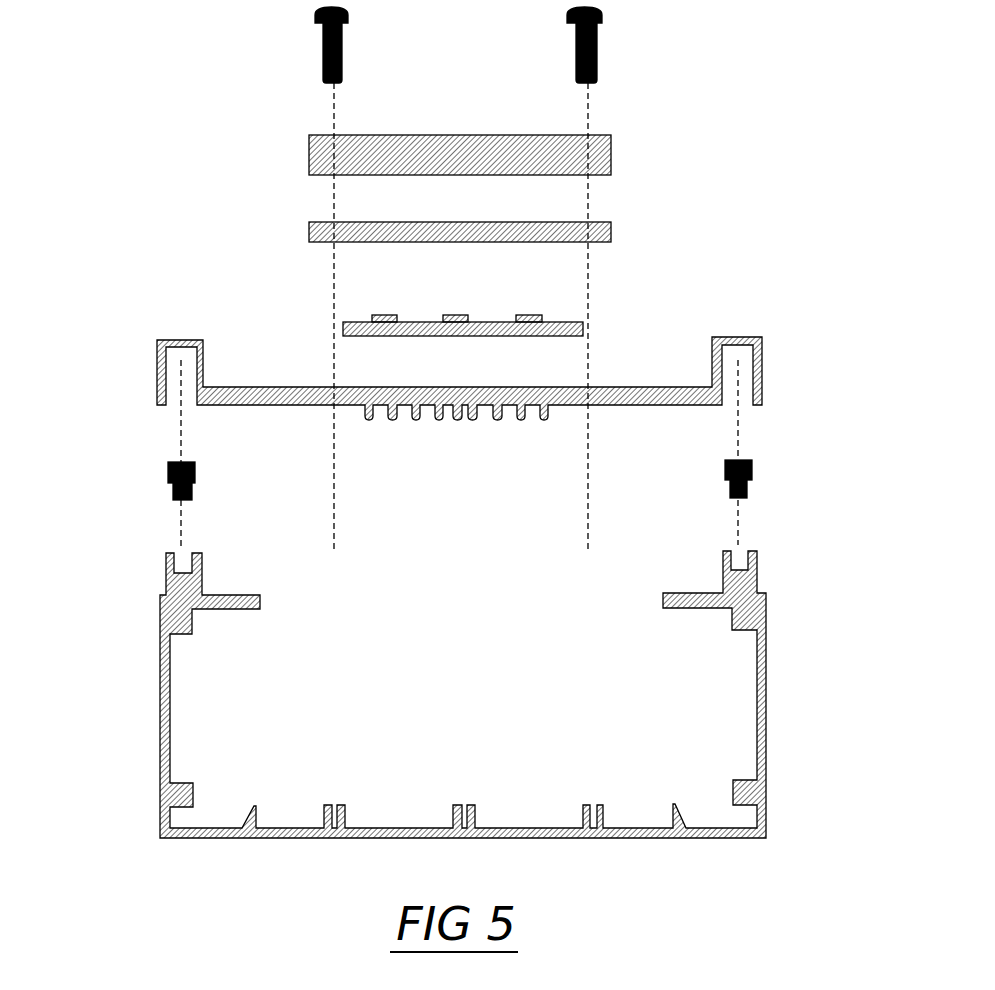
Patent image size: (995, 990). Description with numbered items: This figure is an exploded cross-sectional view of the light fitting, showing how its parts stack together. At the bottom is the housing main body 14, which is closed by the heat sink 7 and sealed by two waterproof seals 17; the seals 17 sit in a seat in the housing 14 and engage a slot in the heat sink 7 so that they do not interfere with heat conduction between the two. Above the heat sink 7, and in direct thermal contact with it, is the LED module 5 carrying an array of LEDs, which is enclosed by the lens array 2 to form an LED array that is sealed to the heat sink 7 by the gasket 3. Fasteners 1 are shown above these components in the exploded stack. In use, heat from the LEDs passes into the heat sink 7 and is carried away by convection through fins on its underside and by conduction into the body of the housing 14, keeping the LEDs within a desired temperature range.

The screw 1 is at (323, 62).
The lens array 2 is at (612, 153).
The gasket 3 is at (613, 230).
The LED module 5 is at (590, 323).
The heat sink 7 is at (293, 400).
The housing main body 14 is at (753, 618).
The waterproof seal 17 is at (162, 483).